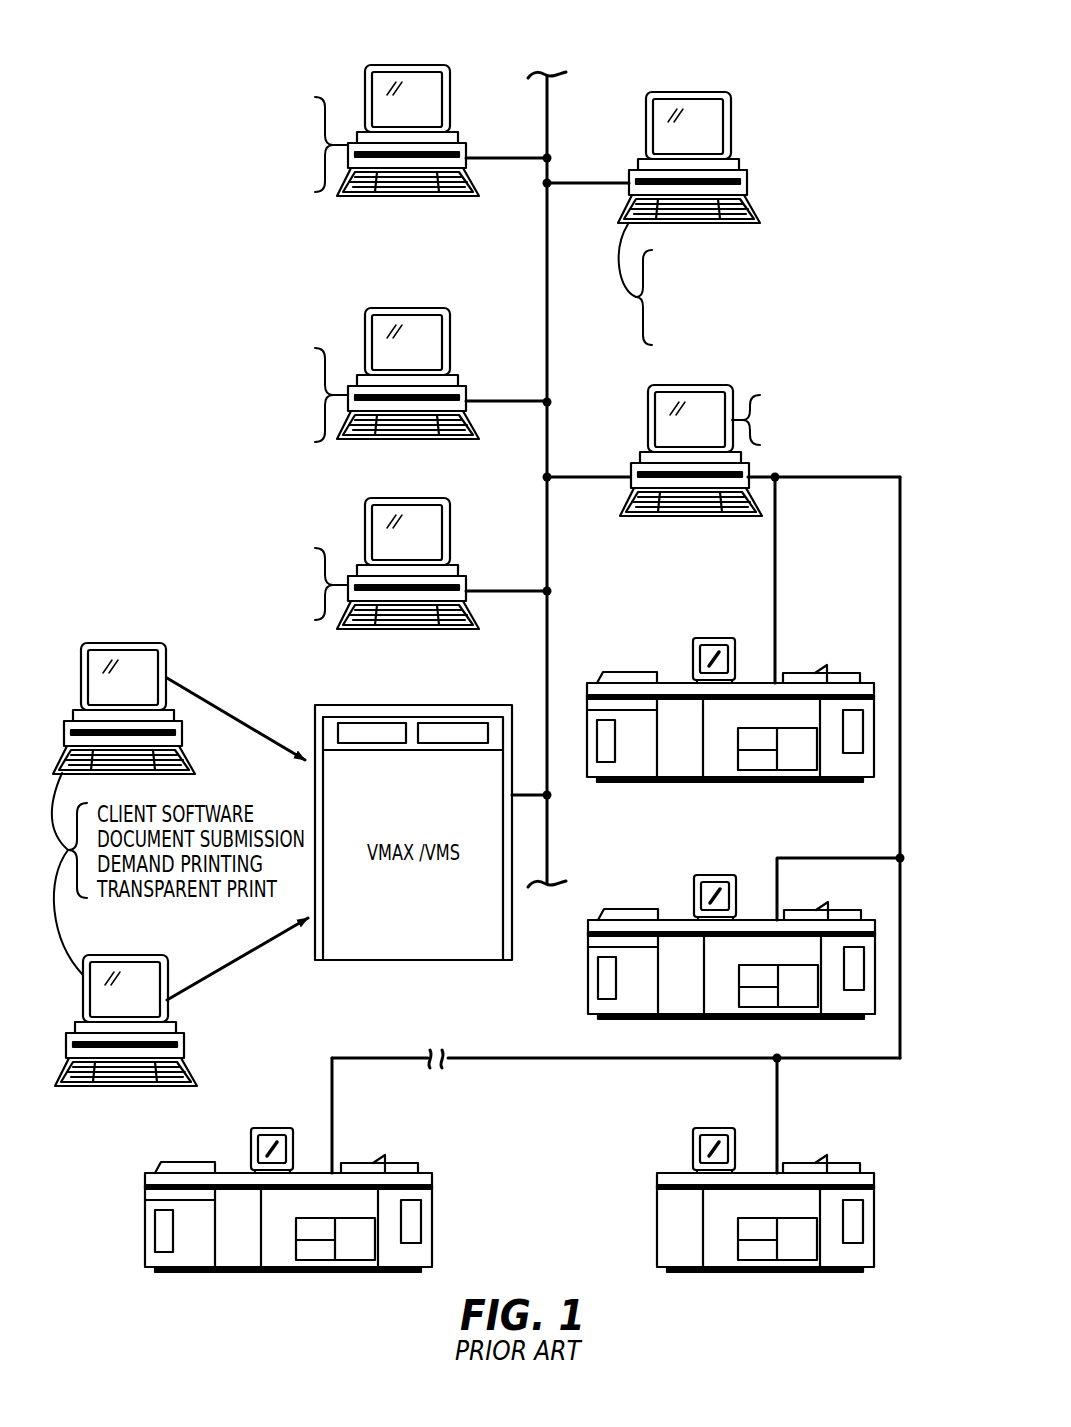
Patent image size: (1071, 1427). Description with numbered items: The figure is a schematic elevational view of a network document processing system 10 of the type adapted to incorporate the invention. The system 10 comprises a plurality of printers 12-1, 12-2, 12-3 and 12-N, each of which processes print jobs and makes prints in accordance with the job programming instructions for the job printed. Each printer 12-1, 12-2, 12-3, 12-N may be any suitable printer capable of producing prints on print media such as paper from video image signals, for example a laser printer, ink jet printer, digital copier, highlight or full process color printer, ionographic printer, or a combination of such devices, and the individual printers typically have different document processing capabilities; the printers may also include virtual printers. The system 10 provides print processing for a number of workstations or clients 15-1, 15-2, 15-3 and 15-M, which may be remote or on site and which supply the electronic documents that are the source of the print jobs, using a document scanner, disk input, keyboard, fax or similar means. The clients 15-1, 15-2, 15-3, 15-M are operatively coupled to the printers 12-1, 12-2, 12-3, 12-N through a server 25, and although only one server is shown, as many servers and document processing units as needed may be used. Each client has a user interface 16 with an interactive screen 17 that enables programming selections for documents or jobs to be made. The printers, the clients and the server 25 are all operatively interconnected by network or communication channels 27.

The network document processing system 10 is at (716, 57).
The printer 12-1 is at (661, 660).
The printer 12-2 is at (661, 888).
The printer 12-3 is at (661, 1154).
The printer 12-N is at (477, 1142).
The client 15-1 is at (310, 132).
The client 15-2 is at (311, 358).
The client 15-3 is at (311, 545).
The client 15-M is at (722, 198).
The user interface 16 is at (408, 203).
The interactive screen 17 is at (381, 80).
The server 25 is at (641, 399).
The network or communication channels 27 is at (547, 210).